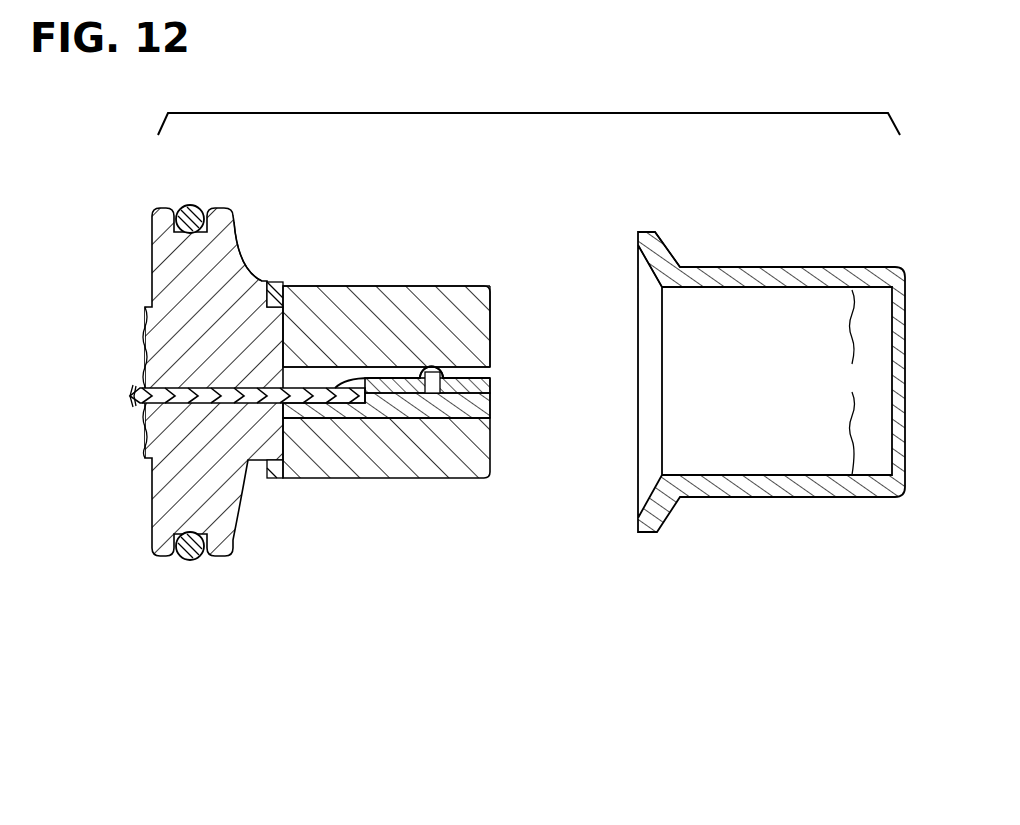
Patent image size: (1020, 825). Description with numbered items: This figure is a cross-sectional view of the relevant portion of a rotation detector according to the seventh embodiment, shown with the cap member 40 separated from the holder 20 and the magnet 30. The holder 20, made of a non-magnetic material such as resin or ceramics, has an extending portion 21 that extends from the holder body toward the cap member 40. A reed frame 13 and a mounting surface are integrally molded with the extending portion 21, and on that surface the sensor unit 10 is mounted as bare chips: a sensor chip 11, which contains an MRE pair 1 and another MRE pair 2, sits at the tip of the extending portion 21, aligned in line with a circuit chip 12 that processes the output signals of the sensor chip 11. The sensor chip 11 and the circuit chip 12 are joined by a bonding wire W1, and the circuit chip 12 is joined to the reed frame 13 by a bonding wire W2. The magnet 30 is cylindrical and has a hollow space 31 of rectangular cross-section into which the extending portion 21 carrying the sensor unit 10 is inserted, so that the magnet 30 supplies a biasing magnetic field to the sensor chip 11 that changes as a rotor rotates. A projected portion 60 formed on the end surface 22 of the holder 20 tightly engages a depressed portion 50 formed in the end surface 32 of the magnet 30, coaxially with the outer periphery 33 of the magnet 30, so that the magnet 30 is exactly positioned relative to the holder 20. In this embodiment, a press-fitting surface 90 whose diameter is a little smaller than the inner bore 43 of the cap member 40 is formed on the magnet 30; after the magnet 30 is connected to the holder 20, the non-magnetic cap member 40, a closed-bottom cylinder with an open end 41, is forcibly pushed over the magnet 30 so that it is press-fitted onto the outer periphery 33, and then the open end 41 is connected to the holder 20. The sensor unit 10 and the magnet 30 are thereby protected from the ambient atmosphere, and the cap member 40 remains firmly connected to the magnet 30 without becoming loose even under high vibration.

The MRE pair 1 is at (487, 378).
The MRE pair 2 is at (431, 373).
The sensor unit 10 is at (558, 367).
The sensor chip 11 is at (492, 393).
The circuit chip 12 is at (492, 405).
The reed frame 13 is at (323, 405).
The holder 20 is at (165, 511).
The extending portion 21 is at (398, 418).
The end surface 22 is at (266, 281).
The magnet 30 is at (472, 452).
The hollow space 31 is at (352, 367).
The end surface 32 is at (246, 478).
The outer periphery 33 is at (318, 367).
The cap member 40 is at (763, 267).
The open end 41 is at (670, 242).
The inner bore 43 is at (708, 293).
The depressed portion 50 is at (276, 300).
The projected portion 60 is at (280, 478).
The press-fitting surface 90 is at (852, 382).
The bonding wire W1 is at (465, 286).
The bonding wire W2 is at (388, 286).